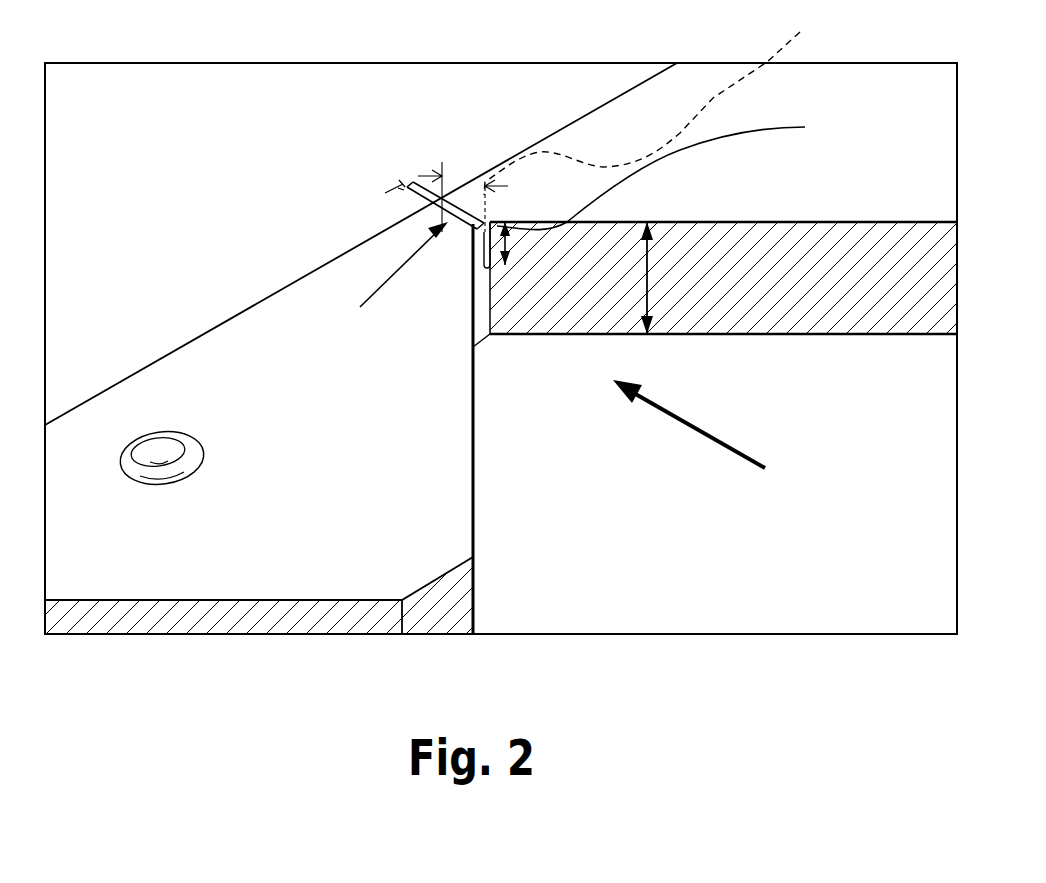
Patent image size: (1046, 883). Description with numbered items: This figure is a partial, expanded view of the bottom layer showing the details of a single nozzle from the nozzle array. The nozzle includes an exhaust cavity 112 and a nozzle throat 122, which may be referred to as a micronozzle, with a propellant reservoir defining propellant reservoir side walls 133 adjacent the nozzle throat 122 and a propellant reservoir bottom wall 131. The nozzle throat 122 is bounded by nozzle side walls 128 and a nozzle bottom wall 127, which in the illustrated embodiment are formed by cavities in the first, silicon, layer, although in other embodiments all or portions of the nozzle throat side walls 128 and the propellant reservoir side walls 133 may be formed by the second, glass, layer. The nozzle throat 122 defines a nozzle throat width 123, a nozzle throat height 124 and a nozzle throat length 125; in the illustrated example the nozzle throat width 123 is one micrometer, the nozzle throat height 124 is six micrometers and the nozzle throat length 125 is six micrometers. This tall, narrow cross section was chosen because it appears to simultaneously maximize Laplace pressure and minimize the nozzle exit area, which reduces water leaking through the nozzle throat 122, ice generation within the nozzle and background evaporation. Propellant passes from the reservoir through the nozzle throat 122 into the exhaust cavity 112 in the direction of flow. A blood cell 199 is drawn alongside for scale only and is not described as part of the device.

The exhaust cavity 112 is at (361, 244).
The nozzle throat 122 is at (356, 292).
The nozzle throat width 123 is at (405, 186).
The nozzle throat height 124 is at (671, 173).
The nozzle throat length 125 is at (662, 99).
The nozzle bottom wall 127 is at (490, 265).
The nozzle side wall 128 is at (478, 233).
The propellant reservoir bottom wall 131 is at (580, 557).
The propellant reservoir side wall 133 is at (895, 291).
The blood cell 199 is at (190, 443).